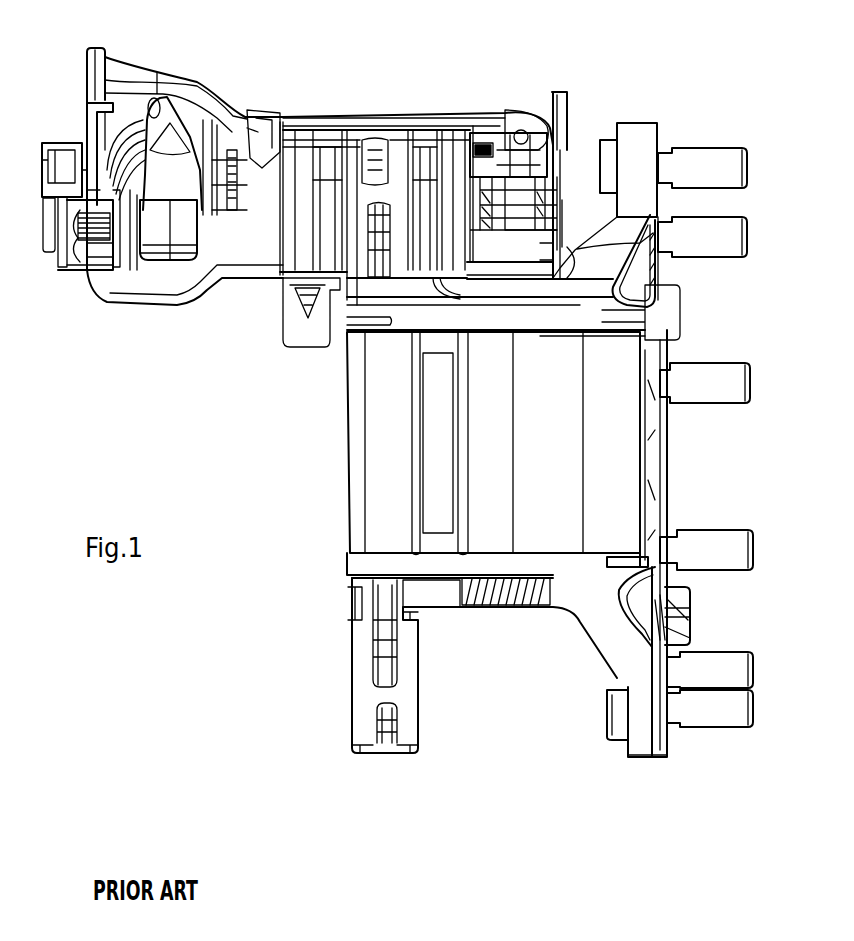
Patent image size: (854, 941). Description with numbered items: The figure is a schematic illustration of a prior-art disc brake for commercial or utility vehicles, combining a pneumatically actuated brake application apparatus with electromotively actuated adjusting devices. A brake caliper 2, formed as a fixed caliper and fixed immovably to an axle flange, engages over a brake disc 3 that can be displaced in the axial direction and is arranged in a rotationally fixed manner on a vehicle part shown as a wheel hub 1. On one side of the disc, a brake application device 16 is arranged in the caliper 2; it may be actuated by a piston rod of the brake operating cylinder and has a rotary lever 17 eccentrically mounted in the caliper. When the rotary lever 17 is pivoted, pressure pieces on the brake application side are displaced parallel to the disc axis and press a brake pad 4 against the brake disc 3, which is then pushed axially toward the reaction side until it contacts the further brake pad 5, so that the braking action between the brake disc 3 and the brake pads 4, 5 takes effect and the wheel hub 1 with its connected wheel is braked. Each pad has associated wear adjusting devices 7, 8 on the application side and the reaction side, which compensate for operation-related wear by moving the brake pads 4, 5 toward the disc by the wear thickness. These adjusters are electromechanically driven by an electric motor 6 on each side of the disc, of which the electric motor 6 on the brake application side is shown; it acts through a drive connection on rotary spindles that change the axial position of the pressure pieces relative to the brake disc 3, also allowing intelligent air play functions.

The wheel hub 1 is at (636, 648).
The brake caliper 2 is at (393, 112).
The brake disc 3 is at (363, 693).
The brake pad 4 is at (322, 158).
The brake pad 5 is at (427, 147).
The electric motor 6 is at (45, 263).
The wear adjusting device 7 is at (255, 124).
The wear adjusting device 8 is at (487, 157).
The brake application device 16 is at (178, 217).
The rotary lever 17 is at (167, 107).